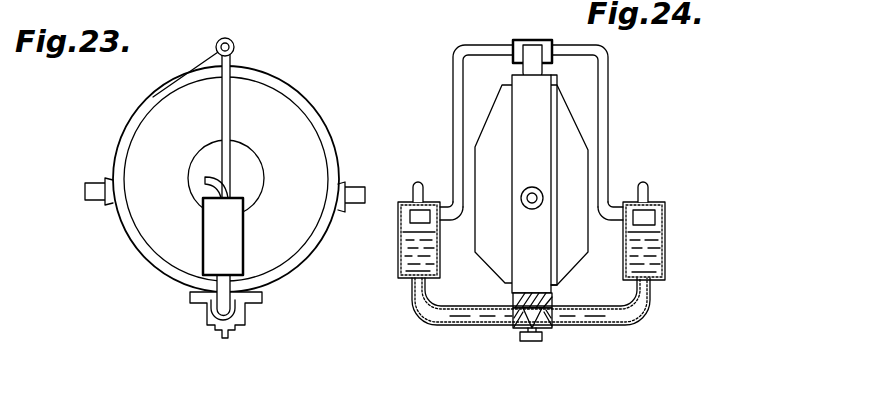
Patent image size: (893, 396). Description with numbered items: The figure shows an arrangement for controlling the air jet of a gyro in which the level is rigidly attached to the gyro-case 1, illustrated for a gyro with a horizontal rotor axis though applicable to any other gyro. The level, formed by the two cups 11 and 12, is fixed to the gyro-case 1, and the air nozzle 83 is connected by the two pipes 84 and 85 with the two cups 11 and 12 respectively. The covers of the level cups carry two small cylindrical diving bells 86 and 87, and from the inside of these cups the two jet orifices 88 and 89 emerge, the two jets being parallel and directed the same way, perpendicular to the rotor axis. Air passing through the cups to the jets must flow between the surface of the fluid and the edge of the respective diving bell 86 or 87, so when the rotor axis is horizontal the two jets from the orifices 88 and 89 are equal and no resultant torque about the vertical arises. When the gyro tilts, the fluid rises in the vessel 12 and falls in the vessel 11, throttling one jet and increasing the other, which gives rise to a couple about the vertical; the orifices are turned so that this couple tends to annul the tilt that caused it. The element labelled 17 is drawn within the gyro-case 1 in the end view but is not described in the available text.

In FIG. 23, the gyro-case 1 is at (300, 133).
In FIG. 24, the gyro-case 1 is at (567, 137).
In FIG. 24, the level cup 11 is at (400, 265).
In FIG. 24, the level cup 12 is at (665, 265).
In FIG. 23, the float chamber 17 is at (245, 243).
In FIG. 23, the air nozzle 83 is at (207, 57).
In FIG. 24, the air nozzle 83 is at (530, 63).
In FIG. 24, the pipe 84 is at (460, 118).
In FIG. 24, the pipe 85 is at (610, 90).
In FIG. 24, the diving bell 86 is at (412, 214).
In FIG. 24, the diving bell 87 is at (653, 215).
In FIG. 23, the jet orifice 88 is at (205, 180).
In FIG. 24, the jet orifice 88 is at (419, 182).
In FIG. 24, the jet orifice 89 is at (644, 185).